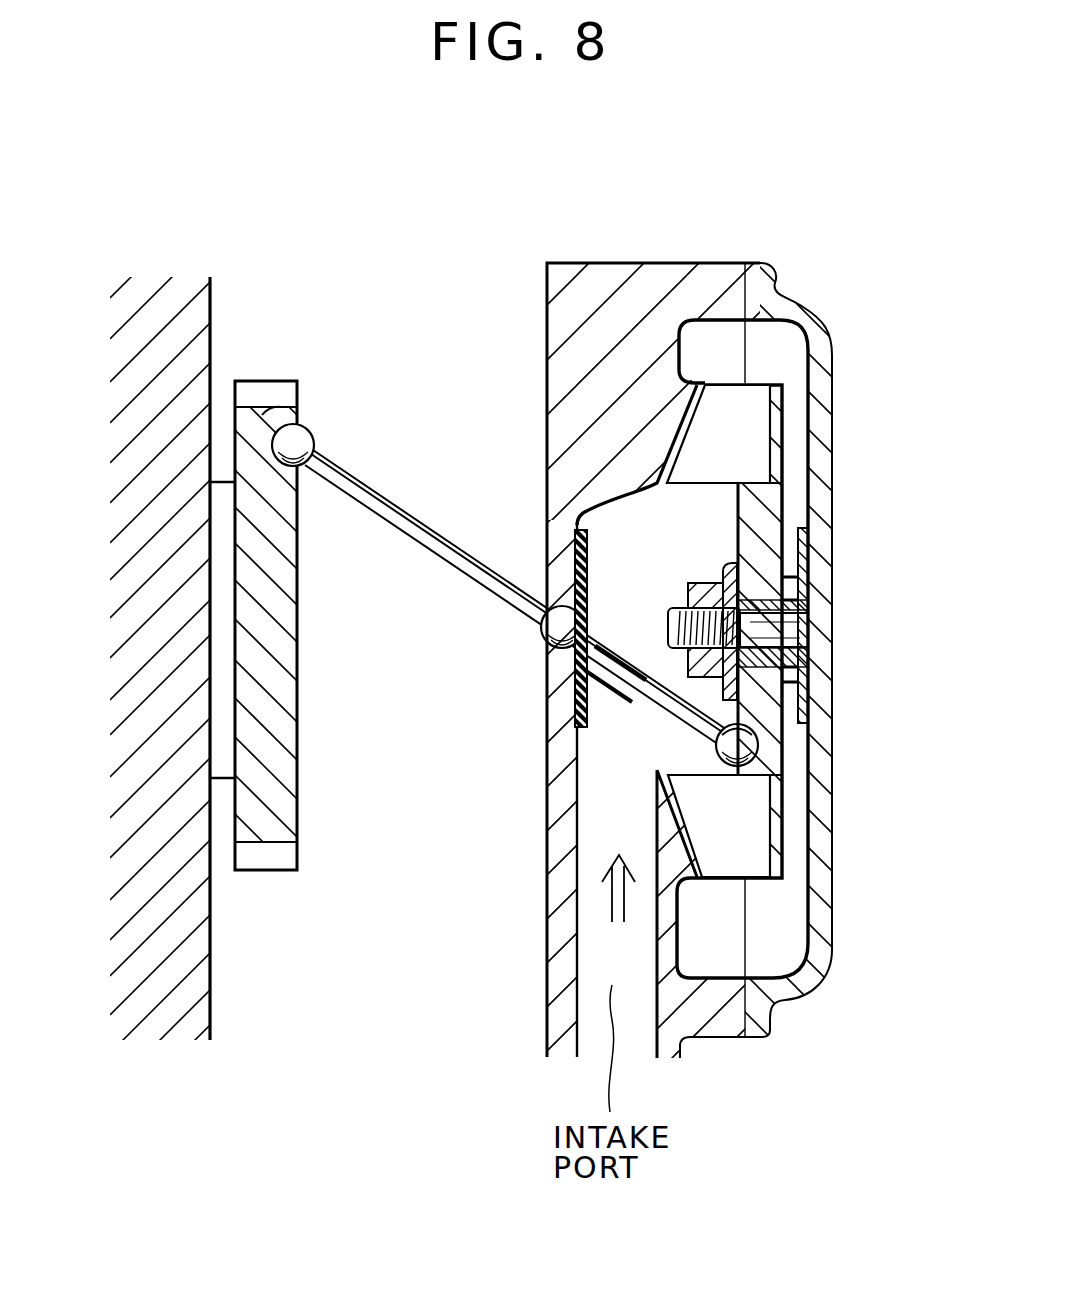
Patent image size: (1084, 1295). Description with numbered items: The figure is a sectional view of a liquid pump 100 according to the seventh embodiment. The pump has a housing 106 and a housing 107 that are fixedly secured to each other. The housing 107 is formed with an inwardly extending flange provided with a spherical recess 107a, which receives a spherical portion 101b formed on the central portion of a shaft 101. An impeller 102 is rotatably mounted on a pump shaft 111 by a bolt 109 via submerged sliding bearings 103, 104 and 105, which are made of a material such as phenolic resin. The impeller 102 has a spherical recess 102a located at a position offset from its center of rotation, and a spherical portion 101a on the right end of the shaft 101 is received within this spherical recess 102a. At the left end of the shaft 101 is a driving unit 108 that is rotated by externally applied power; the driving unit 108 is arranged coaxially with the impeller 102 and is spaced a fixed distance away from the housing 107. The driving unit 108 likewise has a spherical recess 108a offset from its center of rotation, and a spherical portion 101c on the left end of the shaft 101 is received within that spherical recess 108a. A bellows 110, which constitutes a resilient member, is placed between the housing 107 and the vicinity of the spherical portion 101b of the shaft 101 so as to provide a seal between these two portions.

The liquid pump 100 is at (695, 592).
The shaft 101 is at (383, 502).
The spherical portion 101a is at (722, 755).
The spherical portion 101b is at (548, 627).
The spherical portion 101c is at (300, 440).
The impeller 102 is at (722, 410).
The spherical recess 102a is at (762, 752).
The submerged sliding bearing 103 is at (806, 540).
The submerged sliding bearing 104 is at (785, 600).
The submerged sliding bearing 105 is at (790, 672).
The housing 106 is at (820, 440).
The housing 107 is at (605, 318).
The spherical recess 107a is at (540, 585).
The driving unit 108 is at (285, 805).
The spherical recess 108a is at (253, 407).
The bolt 109 is at (155, 322).
The bellows 110 is at (575, 690).
The pump shaft 111 is at (697, 592).